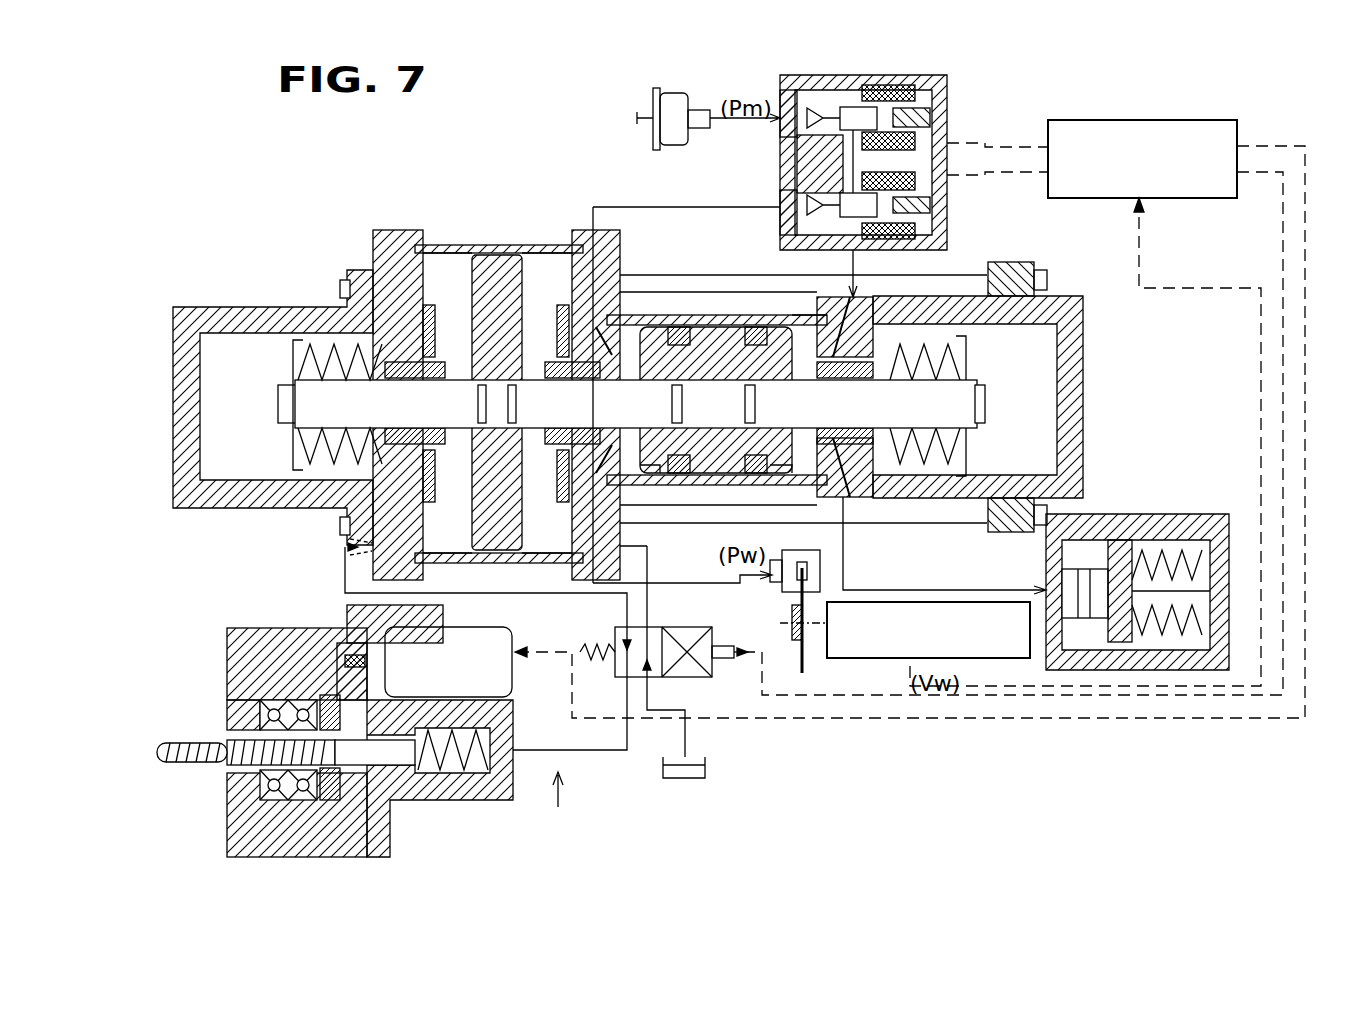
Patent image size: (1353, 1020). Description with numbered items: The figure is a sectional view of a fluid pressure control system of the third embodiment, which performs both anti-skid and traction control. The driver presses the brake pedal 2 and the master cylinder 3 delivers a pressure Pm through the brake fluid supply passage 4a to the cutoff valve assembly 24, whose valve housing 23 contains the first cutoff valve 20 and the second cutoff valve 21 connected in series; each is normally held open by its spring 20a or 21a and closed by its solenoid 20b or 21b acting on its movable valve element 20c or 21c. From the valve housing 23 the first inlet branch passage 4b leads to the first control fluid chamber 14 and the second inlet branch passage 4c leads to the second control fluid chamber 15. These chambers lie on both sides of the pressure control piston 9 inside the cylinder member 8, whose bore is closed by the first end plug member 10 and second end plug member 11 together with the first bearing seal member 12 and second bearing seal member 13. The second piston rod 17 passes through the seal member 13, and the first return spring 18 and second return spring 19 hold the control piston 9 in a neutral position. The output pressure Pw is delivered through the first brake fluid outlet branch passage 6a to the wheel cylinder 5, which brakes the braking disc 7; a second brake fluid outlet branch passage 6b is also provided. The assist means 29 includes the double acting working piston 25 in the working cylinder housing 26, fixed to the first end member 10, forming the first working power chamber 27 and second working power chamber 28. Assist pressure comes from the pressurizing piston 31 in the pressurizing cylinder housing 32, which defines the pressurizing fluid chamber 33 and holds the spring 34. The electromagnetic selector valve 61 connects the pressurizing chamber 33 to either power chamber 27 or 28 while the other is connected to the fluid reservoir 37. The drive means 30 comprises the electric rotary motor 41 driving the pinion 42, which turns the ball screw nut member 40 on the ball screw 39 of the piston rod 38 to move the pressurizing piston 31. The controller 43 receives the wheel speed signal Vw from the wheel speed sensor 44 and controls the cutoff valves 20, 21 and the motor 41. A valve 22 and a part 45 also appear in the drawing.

The brake pedal 2 is at (637, 125).
The master cylinder 3 is at (694, 110).
The brake fluid supply passage 4a is at (745, 124).
The first inlet branch passage 4b is at (672, 205).
The second inlet branch passage 4c is at (855, 265).
The wheel cylinder 5 is at (800, 550).
The first brake fluid outlet branch passage 6a is at (690, 583).
The second brake fluid outlet branch passage 6b is at (848, 580).
The braking disc 7 is at (796, 660).
The cylinder member 8 is at (690, 315).
The pressure control piston 9 is at (730, 335).
The first end plug member 10 is at (803, 374).
The second end plug member 11 is at (812, 302).
The first bearing seal member 12 is at (606, 370).
The second bearing seal member 13 is at (870, 300).
The first control fluid chamber 14 is at (641, 463).
The second control fluid chamber 15 is at (808, 469).
The second piston rod 17 is at (860, 415).
The first return spring 18 is at (330, 345).
The second return spring 19 is at (955, 440).
The first cutoff valve 20 is at (1010, 118).
The spring 20a is at (935, 118).
The solenoid 20b is at (888, 85).
The movable valve element 20c is at (840, 108).
The second cutoff valve 21 is at (1035, 212).
The spring 21a is at (935, 208).
The solenoid 21b is at (930, 235).
The movable valve element 21c is at (820, 235).
The relief valve 22 is at (1132, 514).
The valve housing 23 is at (842, 80).
The cutoff valve assembly 24 is at (909, 150).
The working piston 25 is at (508, 256).
The working cylinder housing 26 is at (445, 247).
The first working power chamber 27 is at (462, 297).
The second working power chamber 28 is at (558, 292).
The assist means 29 is at (570, 843).
The drive means 30 is at (318, 738).
The pressurizing piston 31 is at (400, 800).
The pressurizing cylinder housing 32 is at (392, 850).
The pressurizing fluid chamber 33 is at (445, 800).
The spring 34 is at (482, 800).
The fluid reservoir 37 is at (705, 773).
The piston rod 38 is at (175, 740).
The ball screw 39 is at (208, 742).
The ball screw nut member 40 is at (320, 800).
The electric rotary motor 41 is at (472, 627).
The pinion 42 is at (345, 655).
The anti-skid electronic logic controller 43 is at (1136, 120).
The wheel speed sensor 44 is at (846, 658).
The nut 45 is at (330, 800).
The electromagnetic selector valve 61 is at (672, 627).